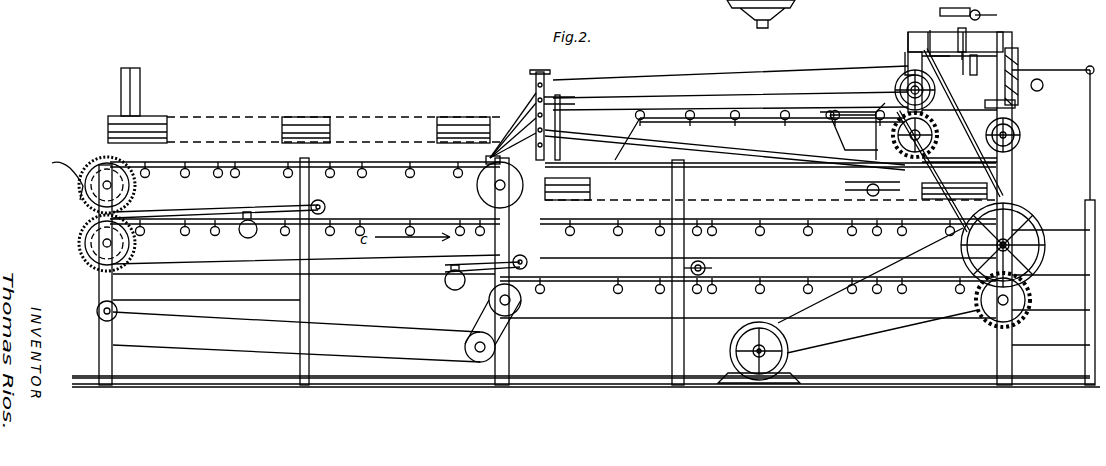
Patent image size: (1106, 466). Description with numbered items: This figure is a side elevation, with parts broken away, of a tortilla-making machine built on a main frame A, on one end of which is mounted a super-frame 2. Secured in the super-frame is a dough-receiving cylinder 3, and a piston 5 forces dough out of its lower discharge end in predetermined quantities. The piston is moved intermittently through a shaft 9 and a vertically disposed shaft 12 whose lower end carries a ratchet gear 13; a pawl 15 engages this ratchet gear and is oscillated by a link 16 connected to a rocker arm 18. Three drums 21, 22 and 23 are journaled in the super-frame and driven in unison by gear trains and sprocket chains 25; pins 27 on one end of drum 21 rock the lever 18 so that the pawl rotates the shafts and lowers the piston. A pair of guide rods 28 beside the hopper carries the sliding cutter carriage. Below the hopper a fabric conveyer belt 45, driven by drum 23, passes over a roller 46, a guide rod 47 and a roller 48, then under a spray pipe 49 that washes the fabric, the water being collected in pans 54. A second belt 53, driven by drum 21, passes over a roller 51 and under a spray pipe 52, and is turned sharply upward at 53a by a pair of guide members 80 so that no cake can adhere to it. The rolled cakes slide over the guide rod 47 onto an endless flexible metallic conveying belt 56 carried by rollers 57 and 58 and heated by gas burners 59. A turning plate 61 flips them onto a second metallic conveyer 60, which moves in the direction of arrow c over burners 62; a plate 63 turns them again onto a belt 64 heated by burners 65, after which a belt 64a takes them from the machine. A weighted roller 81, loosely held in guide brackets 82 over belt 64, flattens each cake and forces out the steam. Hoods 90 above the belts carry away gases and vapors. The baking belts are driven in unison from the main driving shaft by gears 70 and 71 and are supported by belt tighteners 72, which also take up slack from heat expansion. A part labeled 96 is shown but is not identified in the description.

The super-frame 2 is at (908, 41).
The cylinder 3 is at (1018, 54).
The piston 5 is at (1037, 85).
The shaft 9 is at (983, 15).
The vertically disposed shaft 12 is at (960, 30).
The ratchet gear 13 is at (970, 66).
The pawl 15 is at (942, 10).
The link 16 is at (930, 32).
The rocker arm 18 is at (905, 64).
The drum 21 is at (897, 90).
The drum 22 is at (895, 135).
The drum 23 is at (1022, 135).
The sprocket chains 25 is at (1010, 195).
The pins 27 is at (935, 90).
The guide rods 28 is at (1016, 106).
The conveyer belt 45 is at (748, 118).
The roller 46 is at (530, 108).
The guide rod 47 is at (490, 159).
The roller 48 is at (525, 126).
The spray pipe 49 is at (877, 192).
The roller 51 is at (536, 84).
The spray pipe 52 is at (560, 96).
The second belt 53 is at (745, 78).
The upward turn of belt 53a is at (876, 116).
The pans 54 is at (525, 96).
The endless flexible metallic conveying belt 56 is at (355, 163).
The roller 57 is at (480, 184).
The roller 58 is at (132, 186).
The gas burners 59 is at (240, 166).
The second endless flexible metallic conveyer 60 is at (218, 229).
The turning plate 61 is at (68, 186).
The burners 62 is at (575, 231).
The plate 63 is at (1045, 265).
The belt 64 is at (806, 290).
The belt 64a is at (332, 312).
The burners 65 is at (620, 290).
The gear 70 is at (1030, 290).
The gear 71 is at (82, 240).
The belt tighteners 72 is at (325, 205).
The guide members 80 is at (858, 128).
The weighted roller 81 is at (705, 259).
The guide brackets 82 is at (707, 268).
The hoods 90 is at (172, 108).
The shield 96 is at (940, 200).
The main frame A is at (1000, 344).